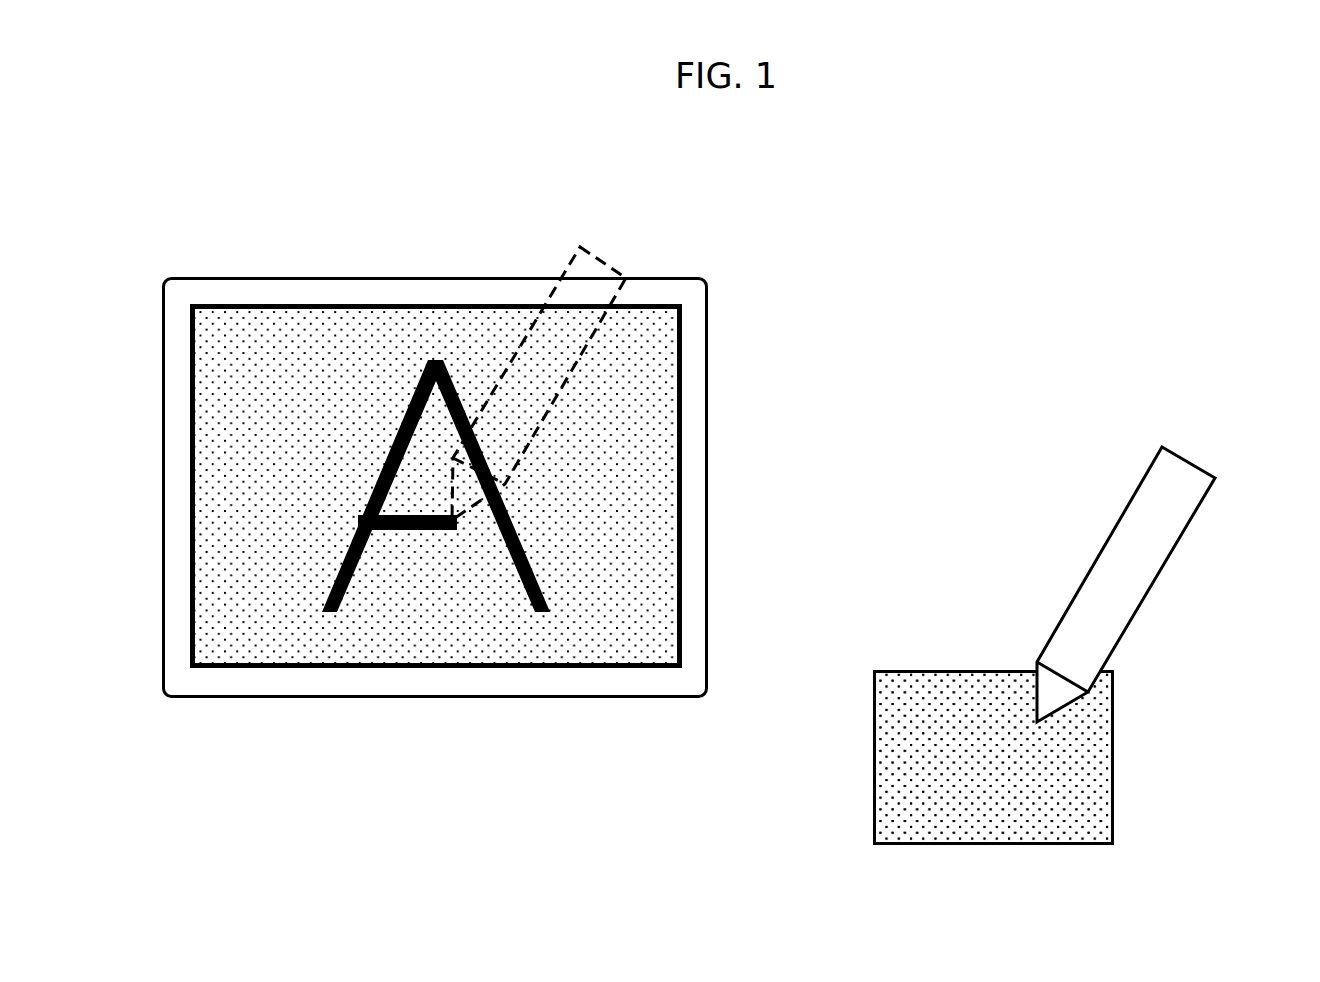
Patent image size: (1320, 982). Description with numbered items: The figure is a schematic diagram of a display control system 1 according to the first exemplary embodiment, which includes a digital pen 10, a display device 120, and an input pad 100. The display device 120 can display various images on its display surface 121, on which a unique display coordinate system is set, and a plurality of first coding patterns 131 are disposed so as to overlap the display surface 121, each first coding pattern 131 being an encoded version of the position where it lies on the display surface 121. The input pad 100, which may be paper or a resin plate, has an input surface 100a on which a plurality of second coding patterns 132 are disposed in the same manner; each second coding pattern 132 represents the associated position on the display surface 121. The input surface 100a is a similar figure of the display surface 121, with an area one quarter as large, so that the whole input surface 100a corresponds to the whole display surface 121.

The display control system 1 is at (806, 236).
The digital pen 10 is at (583, 247).
The input pad 100 is at (910, 668).
The input surface 100a is at (1088, 793).
The display device 120 is at (452, 277).
The display surface 121 is at (353, 327).
The first coding pattern 131 is at (371, 421).
The second coding pattern 132 is at (892, 751).